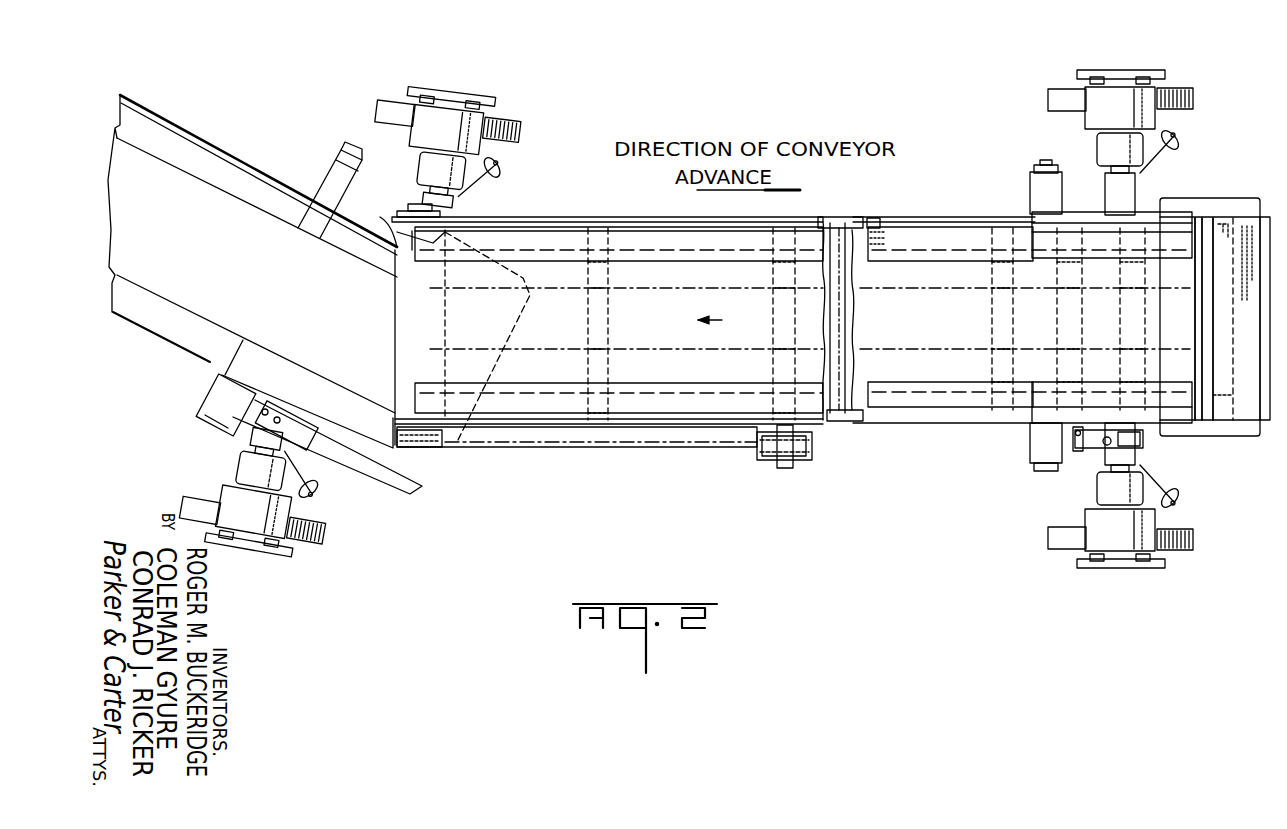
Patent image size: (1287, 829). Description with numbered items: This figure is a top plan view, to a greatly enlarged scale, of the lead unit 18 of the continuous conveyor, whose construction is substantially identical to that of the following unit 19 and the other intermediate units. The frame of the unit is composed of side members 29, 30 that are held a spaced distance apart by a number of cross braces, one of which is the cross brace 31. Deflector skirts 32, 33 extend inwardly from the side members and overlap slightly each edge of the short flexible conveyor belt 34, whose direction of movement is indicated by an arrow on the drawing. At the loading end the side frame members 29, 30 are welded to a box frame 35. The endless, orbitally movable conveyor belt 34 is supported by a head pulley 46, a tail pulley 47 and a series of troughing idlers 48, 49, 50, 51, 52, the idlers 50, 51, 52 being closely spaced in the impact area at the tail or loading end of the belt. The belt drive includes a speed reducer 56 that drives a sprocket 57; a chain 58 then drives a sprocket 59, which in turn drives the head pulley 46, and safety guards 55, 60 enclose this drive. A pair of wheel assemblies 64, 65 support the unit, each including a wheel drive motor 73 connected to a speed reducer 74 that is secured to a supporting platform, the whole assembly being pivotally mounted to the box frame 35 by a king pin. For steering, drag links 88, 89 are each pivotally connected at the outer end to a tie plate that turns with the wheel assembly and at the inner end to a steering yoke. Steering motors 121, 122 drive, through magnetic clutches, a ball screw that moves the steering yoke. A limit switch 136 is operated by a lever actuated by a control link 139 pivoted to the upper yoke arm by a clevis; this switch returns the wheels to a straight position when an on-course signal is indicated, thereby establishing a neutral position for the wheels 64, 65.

The lead unit 18 is at (616, 367).
The conveyor unit 19 is at (222, 130).
The side member 29 is at (830, 422).
The side member 30 is at (835, 222).
The cross brace 31 is at (845, 240).
The deflector skirt 32 is at (935, 405).
The deflector skirt 33 is at (965, 235).
The conveyor belt 34 is at (913, 265).
The box frame 35 is at (1150, 190).
The head pulley 46 is at (388, 222).
The tail pulley 47 is at (1233, 412).
The troughing idler 48 is at (612, 322).
The troughing idler 49 is at (773, 333).
The troughing idler 50 is at (988, 334).
The troughing idler 51 is at (1060, 322).
The troughing idler 52 is at (1125, 322).
The safety guard 55 is at (807, 460).
The speed reducer 56 is at (818, 428).
The sprocket 57 is at (764, 468).
The chain 58 is at (632, 448).
The sprocket 59 is at (441, 450).
The safety guard 60 is at (540, 448).
The wheel 64 is at (701, 504).
The wheel 65 is at (791, 130).
The wheel drive motor 73 is at (1095, 498).
The speed reducer 74 is at (1130, 333).
The drag link 88 is at (1178, 150).
The drag link 89 is at (1182, 487).
The steering motor 121 is at (1050, 168).
The steering motor 122 is at (1036, 470).
The limit switch 136 is at (1150, 446).
The control link 139 is at (1052, 468).